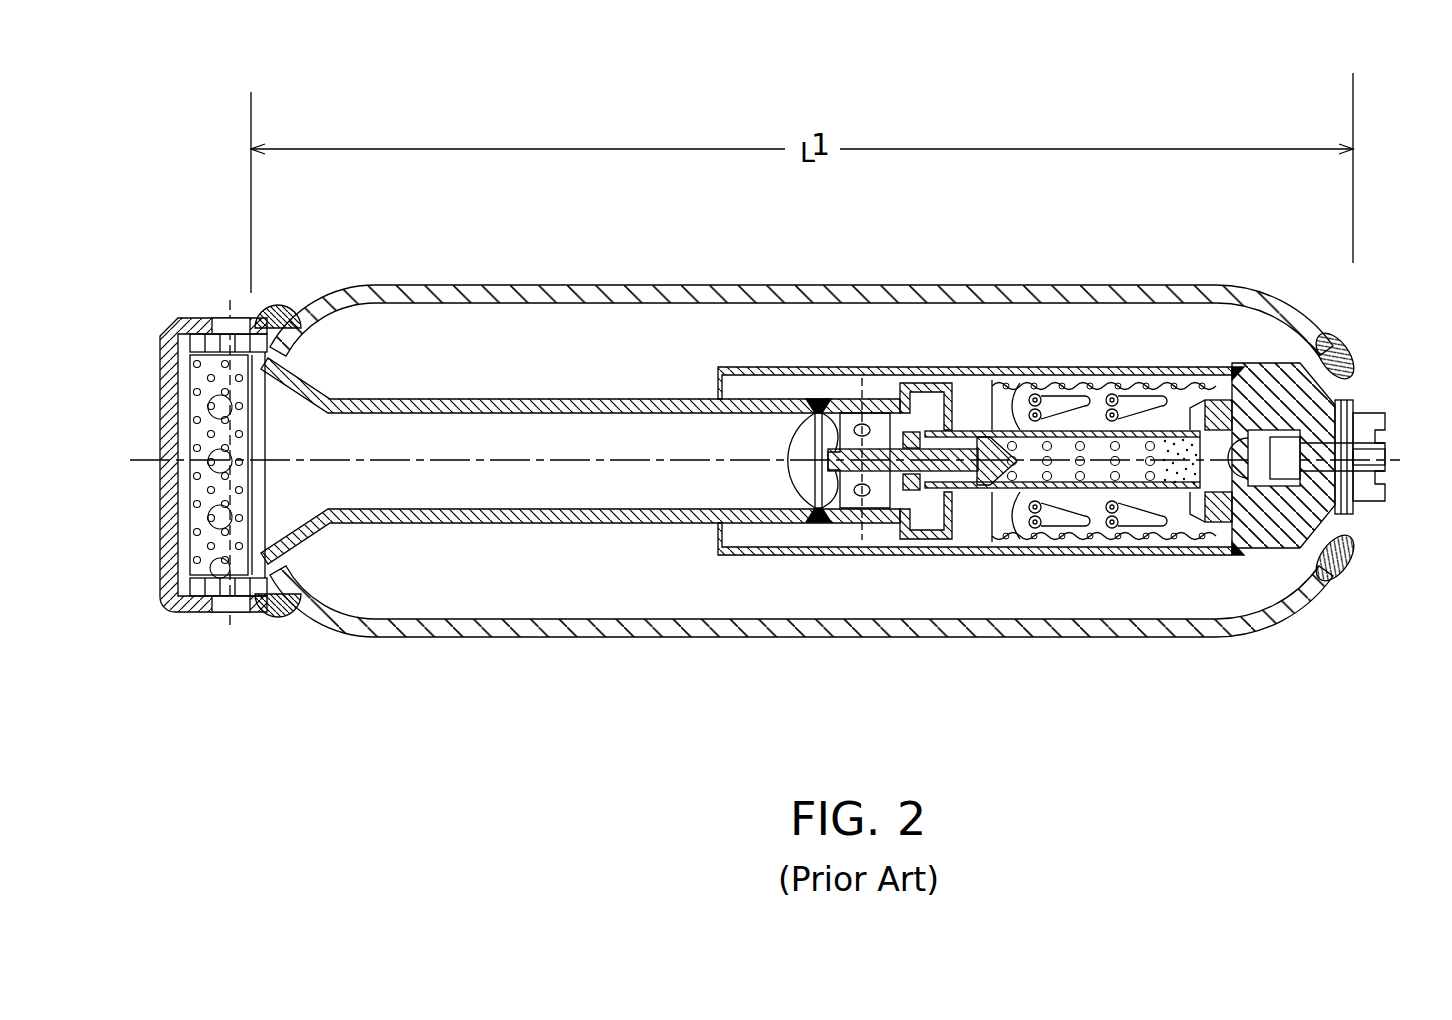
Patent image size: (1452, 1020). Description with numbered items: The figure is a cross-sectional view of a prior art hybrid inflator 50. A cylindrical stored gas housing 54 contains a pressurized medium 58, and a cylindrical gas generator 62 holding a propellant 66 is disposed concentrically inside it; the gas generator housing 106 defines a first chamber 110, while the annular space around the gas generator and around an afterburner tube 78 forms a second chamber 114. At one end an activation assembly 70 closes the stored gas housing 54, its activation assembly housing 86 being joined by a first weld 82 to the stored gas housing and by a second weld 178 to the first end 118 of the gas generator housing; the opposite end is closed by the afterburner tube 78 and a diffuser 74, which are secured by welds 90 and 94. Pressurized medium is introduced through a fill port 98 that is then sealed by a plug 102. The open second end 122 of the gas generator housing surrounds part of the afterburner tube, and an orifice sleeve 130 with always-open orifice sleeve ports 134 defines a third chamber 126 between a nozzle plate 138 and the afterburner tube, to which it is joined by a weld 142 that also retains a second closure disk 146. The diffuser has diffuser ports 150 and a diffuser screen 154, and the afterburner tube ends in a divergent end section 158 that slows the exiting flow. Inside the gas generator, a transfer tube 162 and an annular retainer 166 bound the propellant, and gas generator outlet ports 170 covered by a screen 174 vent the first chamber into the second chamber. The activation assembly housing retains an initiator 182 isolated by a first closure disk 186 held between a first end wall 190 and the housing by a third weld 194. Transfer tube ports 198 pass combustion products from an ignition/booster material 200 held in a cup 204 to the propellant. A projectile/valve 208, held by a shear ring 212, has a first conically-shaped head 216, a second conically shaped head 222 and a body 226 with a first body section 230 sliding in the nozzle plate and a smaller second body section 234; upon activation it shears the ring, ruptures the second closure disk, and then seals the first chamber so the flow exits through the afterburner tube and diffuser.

The hybrid inflator 50 is at (380, 638).
The stored gas housing 54 is at (1156, 285).
The pressurized medium 58 is at (523, 586).
The gas generator 62 is at (1050, 378).
The propellant 66 is at (1072, 545).
The activation assembly 70 is at (1388, 393).
The diffuser 74 is at (180, 318).
The afterburner tube 78 is at (434, 304).
The first weld 82 is at (1348, 578).
The activation assembly housing 86 is at (1325, 534).
The weld 90 is at (268, 380).
The weld 94 is at (280, 614).
The fill port 98 is at (1284, 343).
The plug 102 is at (1307, 305).
The gas generator housing 106 is at (1124, 388).
The first chamber 110 is at (1178, 500).
The second chamber 114 is at (378, 292).
The first end 118 is at (1283, 550).
The second end 122 is at (717, 366).
The third chamber 126 is at (843, 503).
The orifice sleeve 130 is at (879, 378).
The orifice sleeve ports 134 is at (856, 496).
The nozzle plate 138 is at (932, 392).
The weld 142 is at (812, 398).
The second closure disk 146 is at (798, 445).
The diffuser ports 150 is at (214, 612).
The diffuser screen 154 is at (215, 318).
The divergent end section 158 is at (300, 540).
The transfer tube 162 is at (1094, 382).
The retainer 166 is at (990, 545).
The gas generator outlet ports 170 is at (1120, 545).
The screen 174 is at (1180, 545).
The second weld 178 is at (1267, 363).
The initiator 182 is at (1346, 402).
The first closure disk 186 is at (1252, 363).
The first end wall 190 is at (1215, 530).
The third weld 194 is at (1240, 556).
The transfer tube ports 198 is at (1002, 385).
The ignition/booster material 200 is at (1178, 430).
The cup 204 is at (1100, 490).
The projectile/valve 208 is at (966, 490).
The shear ring 212 is at (900, 540).
The first conically-shaped head 216 is at (1040, 545).
The second conically shaped head 222 is at (792, 484).
The body 226 is at (888, 410).
The first body section 230 is at (955, 520).
The second body section 234 is at (824, 410).